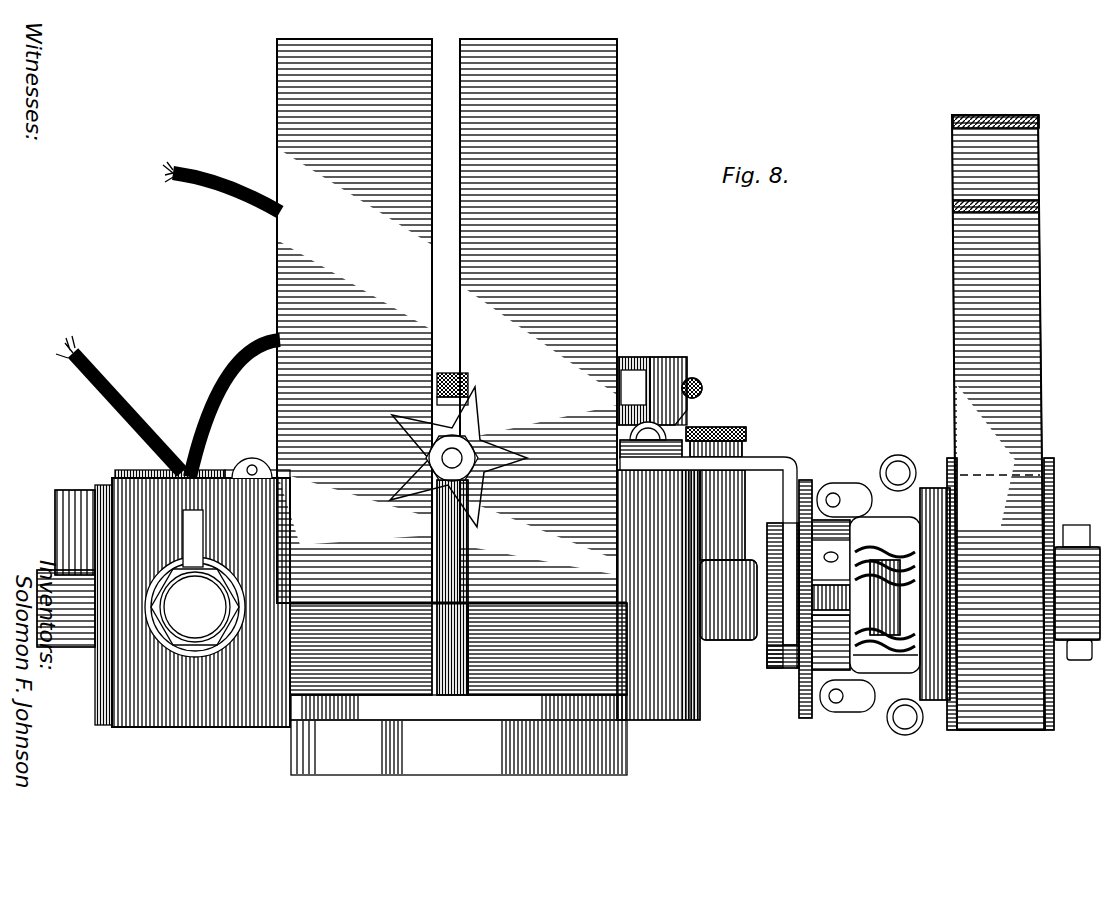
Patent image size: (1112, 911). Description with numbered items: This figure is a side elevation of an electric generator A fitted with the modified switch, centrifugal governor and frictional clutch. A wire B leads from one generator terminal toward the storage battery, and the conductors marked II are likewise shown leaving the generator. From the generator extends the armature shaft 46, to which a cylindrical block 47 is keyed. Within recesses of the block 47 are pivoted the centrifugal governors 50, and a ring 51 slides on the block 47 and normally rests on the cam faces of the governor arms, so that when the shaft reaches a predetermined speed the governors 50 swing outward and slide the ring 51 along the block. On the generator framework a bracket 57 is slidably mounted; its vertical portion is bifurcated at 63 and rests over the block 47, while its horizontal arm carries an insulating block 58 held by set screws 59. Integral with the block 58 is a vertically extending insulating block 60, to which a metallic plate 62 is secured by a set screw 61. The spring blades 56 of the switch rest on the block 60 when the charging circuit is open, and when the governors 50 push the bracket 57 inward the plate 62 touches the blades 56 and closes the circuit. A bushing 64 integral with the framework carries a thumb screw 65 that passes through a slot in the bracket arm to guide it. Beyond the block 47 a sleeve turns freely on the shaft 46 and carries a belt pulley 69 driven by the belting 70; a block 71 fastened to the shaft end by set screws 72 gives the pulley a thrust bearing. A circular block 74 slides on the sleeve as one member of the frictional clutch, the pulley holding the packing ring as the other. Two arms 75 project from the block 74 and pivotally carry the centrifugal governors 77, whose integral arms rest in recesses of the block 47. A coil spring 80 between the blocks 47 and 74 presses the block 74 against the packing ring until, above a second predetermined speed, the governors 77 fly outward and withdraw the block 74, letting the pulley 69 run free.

The armature shaft 46 is at (764, 640).
The cylindrical block 47 is at (850, 527).
The centrifugal governors 50 is at (885, 599).
The ring 51 is at (800, 694).
The spring blades 56 is at (624, 392).
The bracket 57 is at (778, 460).
The insulating block 58 is at (619, 449).
The set screws 59 is at (628, 432).
The vertically extending block 60 is at (638, 360).
The set screw 61 is at (702, 384).
The metallic plate 62 is at (683, 362).
The bifurcated portion 63 is at (790, 575).
The bushing 64 is at (745, 512).
The thumb screw 65 is at (720, 428).
The belt pulley 69 is at (1054, 698).
The belting 70 is at (952, 355).
The block 71 is at (1072, 545).
The set screws 72 is at (1085, 660).
The circular block 74 is at (940, 555).
The arms 75 is at (838, 492).
The centrifugal governors 77 is at (893, 458).
The coil spring 80 is at (885, 660).
The electric generator A is at (452, 407).
The wire B is at (120, 393).
The cable II is at (223, 197).